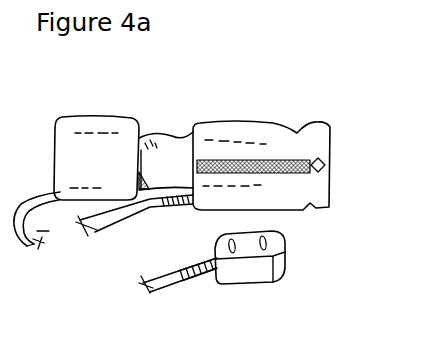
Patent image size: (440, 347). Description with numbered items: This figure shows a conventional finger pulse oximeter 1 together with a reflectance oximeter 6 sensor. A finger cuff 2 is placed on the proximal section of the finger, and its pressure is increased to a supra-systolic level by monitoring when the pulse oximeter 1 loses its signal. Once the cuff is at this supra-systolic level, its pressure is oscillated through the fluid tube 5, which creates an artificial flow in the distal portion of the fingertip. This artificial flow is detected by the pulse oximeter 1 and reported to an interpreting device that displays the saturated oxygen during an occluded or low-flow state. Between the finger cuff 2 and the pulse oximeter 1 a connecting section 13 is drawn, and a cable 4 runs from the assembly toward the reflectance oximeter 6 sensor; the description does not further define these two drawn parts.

The finger pulse oximeter 1 is at (290, 132).
The finger cuff 2 is at (103, 118).
The coupling section 13 is at (168, 142).
The cable 4 is at (112, 218).
The fluid tube 5 is at (23, 233).
The reflectance oximeter 6 is at (270, 270).